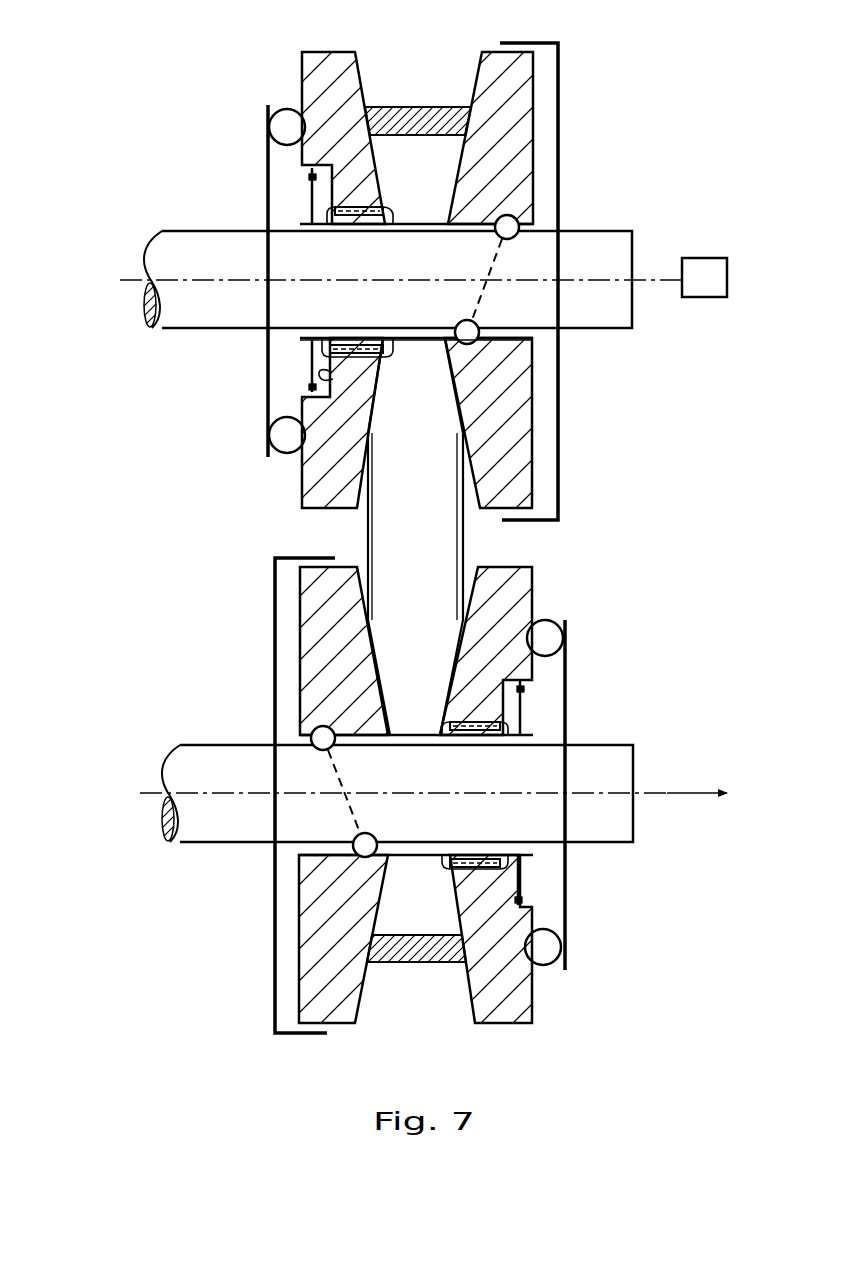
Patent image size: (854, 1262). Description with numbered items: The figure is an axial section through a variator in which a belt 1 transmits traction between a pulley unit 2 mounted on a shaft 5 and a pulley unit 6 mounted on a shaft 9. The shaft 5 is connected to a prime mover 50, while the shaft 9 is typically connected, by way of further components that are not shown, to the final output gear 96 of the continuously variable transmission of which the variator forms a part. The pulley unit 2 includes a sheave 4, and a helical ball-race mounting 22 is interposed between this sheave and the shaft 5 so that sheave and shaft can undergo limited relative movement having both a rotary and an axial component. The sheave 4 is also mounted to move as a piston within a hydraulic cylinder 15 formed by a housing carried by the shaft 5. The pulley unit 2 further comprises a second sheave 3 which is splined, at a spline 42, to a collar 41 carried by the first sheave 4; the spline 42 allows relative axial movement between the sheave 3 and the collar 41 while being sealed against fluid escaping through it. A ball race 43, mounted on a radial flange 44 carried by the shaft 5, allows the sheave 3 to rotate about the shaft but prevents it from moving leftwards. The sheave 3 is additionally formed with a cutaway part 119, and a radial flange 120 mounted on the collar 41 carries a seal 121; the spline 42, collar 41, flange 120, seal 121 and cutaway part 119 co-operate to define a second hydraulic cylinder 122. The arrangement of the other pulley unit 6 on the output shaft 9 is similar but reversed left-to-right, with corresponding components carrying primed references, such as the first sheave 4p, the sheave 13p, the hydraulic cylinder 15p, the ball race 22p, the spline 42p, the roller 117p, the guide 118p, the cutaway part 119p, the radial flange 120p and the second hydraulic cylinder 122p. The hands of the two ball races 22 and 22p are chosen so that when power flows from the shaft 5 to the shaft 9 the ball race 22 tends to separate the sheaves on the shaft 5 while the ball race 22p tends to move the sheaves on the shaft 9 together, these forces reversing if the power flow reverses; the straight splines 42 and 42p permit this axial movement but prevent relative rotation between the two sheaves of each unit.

The belt 1 is at (408, 107).
The pulley unit 2 is at (290, 66).
The second sheave 3 is at (330, 70).
The sheave 4 is at (510, 115).
The shaft 5 is at (593, 231).
The pulley unit 6 is at (555, 576).
The shaft 9 is at (607, 757).
The conical pulley disk 13p is at (513, 603).
The hydraulic cylinder 15 is at (545, 145).
The hydraulic cylinder 15p is at (285, 950).
The helical ball-race mounting 22 is at (493, 258).
The helical ball-race mounting 22p is at (337, 770).
The collar 41 is at (430, 342).
The spline 42 is at (357, 204).
The spline 42p is at (474, 870).
The ball race 43 is at (283, 127).
The radial flange 44 is at (268, 164).
The prime mover 50 is at (700, 258).
The final output gear 96 is at (713, 794).
The roller 117p is at (547, 637).
The guide 118p is at (565, 695).
The cutaway part 119 is at (353, 378).
The cutaway part 119p is at (500, 700).
The radial flange 120 is at (310, 357).
The radial flange 120p is at (520, 877).
The seal 121 is at (312, 387).
The second hydraulic cylinder 122 is at (322, 198).
The second hydraulic cylinder 122p is at (513, 885).
The first sheave 4p is at (320, 628).